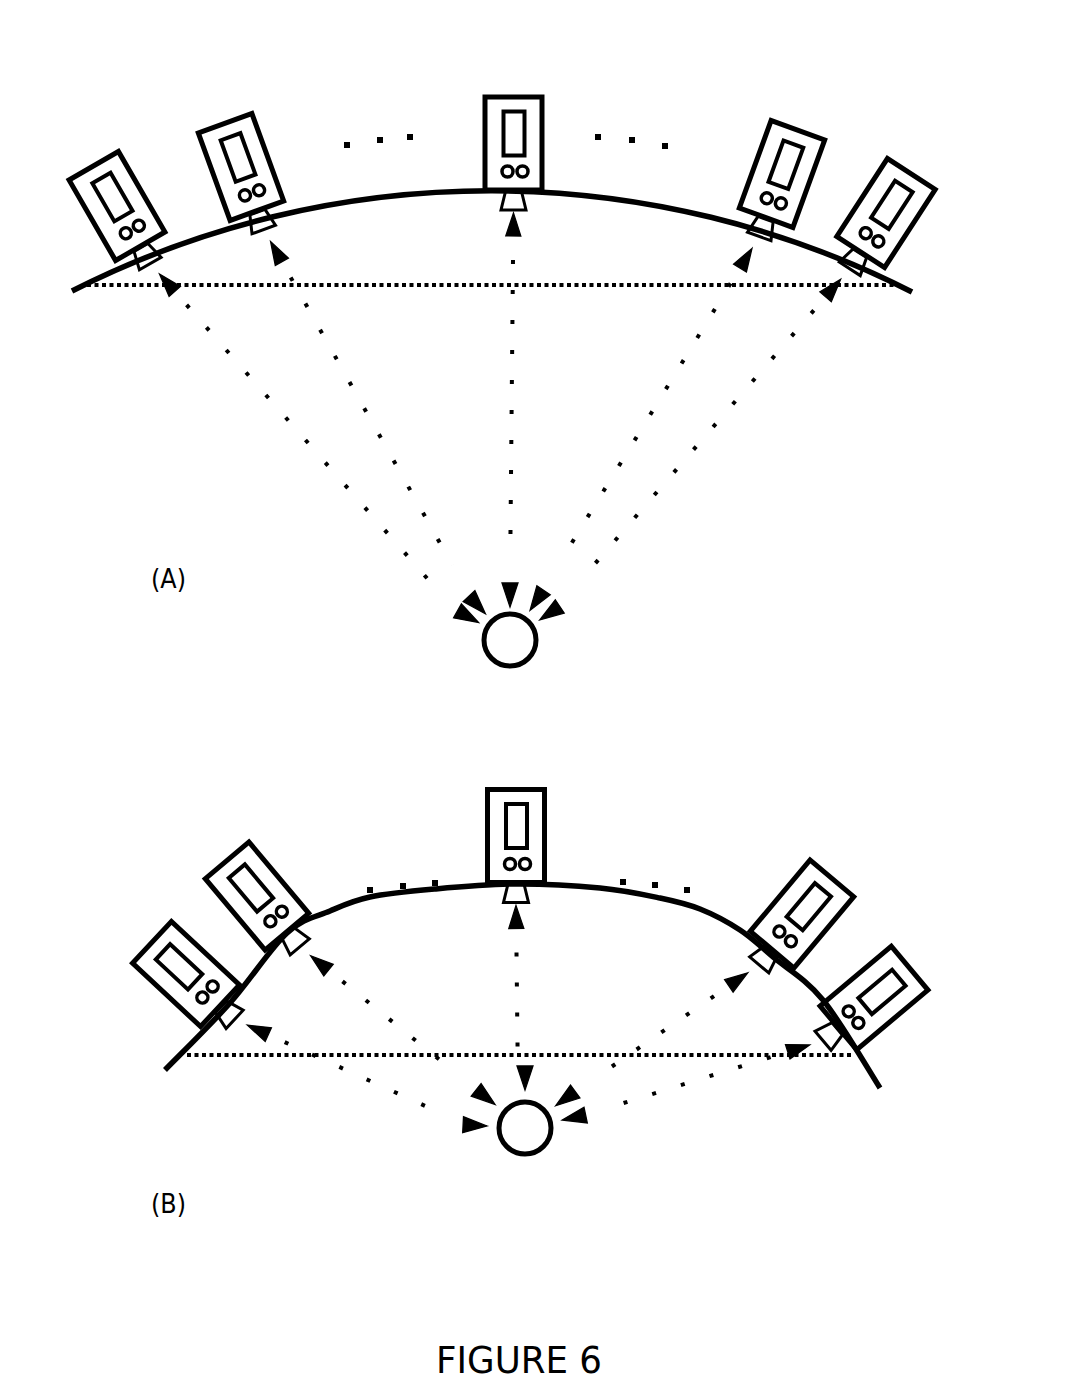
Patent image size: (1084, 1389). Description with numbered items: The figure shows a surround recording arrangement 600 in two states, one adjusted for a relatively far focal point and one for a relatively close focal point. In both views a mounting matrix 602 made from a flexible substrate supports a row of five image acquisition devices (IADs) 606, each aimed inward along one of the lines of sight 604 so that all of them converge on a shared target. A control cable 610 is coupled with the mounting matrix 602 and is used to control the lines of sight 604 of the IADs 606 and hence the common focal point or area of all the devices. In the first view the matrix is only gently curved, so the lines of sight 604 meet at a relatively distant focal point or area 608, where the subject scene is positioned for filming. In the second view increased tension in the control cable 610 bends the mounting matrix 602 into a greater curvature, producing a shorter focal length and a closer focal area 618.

In FIG. 6A, the surround recording arrangement 600 is at (722, 100).
In FIG. 6A, the mounting matrix 602 is at (358, 190).
In FIG. 6B, the mounting matrix 602 is at (720, 912).
In FIG. 6A, the lines of sight 604 is at (417, 517).
In FIG. 6B, the lines of sight 604 is at (405, 1090).
In FIG. 6A, the image acquisition devices (IADs) 606 is at (227, 123).
In FIG. 6A, the focal point or area 608 is at (538, 640).
In FIG. 6A, the control cable 610 is at (133, 293).
In FIG. 6B, the control cable 610 is at (268, 1057).
In FIG. 6B, the focal area 618 is at (525, 1155).